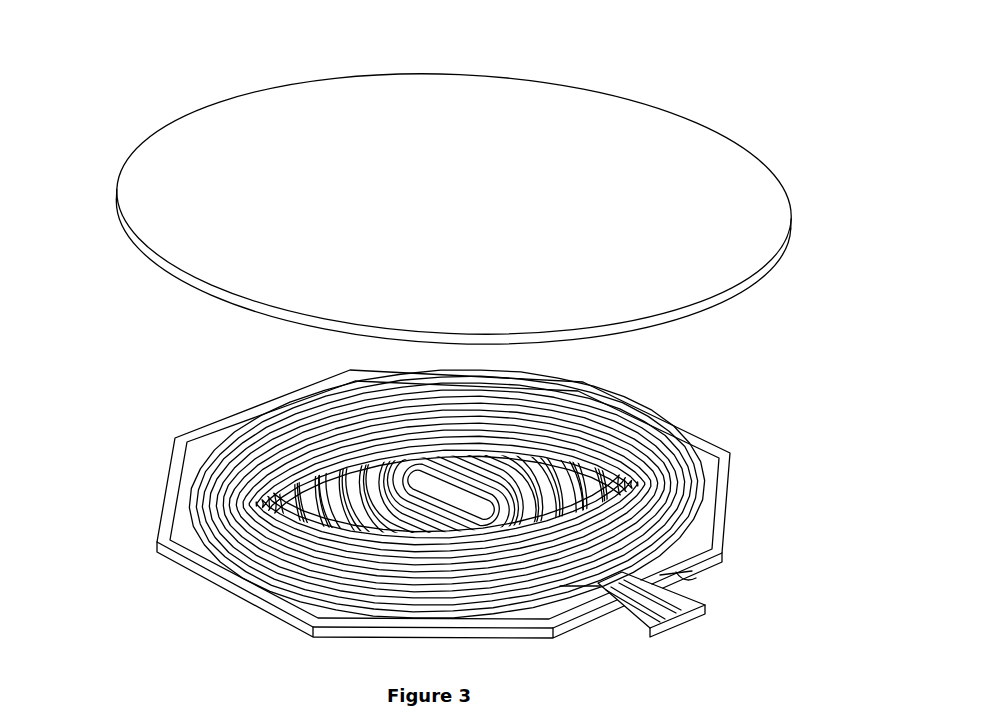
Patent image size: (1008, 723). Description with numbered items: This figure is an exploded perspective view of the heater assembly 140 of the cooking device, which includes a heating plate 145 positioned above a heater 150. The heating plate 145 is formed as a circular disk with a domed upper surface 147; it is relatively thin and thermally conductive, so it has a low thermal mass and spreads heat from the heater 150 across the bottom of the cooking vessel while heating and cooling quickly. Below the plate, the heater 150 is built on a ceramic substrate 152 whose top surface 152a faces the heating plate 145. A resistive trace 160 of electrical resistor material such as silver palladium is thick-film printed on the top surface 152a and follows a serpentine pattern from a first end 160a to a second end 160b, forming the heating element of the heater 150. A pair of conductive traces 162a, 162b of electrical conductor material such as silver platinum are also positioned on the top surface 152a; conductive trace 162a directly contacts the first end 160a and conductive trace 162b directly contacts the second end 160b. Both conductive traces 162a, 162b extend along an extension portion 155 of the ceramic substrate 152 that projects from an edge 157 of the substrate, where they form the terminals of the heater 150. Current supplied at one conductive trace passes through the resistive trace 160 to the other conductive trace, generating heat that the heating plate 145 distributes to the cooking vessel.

The heater assembly 140 is at (126, 88).
The heating plate 145 is at (454, 209).
The domed upper surface 147 is at (454, 193).
The heater 150 is at (778, 357).
The ceramic substrate 152 is at (734, 460).
The top surface 152a is at (710, 452).
The extension portion 155 is at (637, 630).
The edge 157 is at (700, 580).
The resistive trace 160 is at (664, 444).
The first end 160a is at (575, 590).
The second end 160b is at (693, 572).
The conductive trace 162a is at (663, 613).
The conductive trace 162b is at (697, 611).